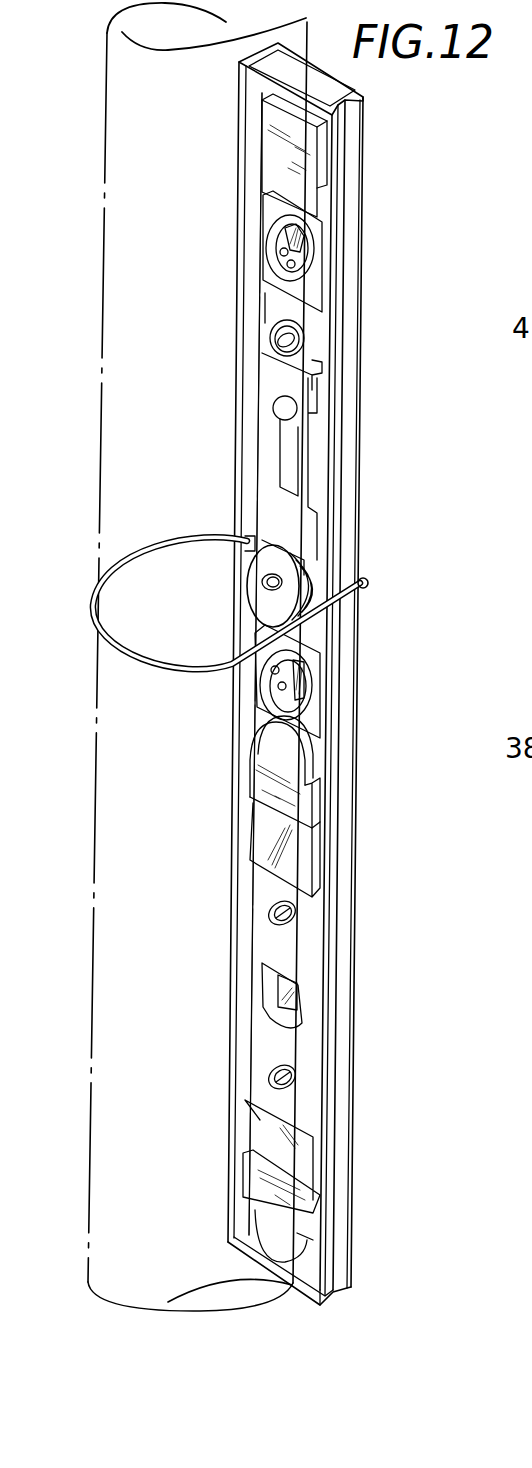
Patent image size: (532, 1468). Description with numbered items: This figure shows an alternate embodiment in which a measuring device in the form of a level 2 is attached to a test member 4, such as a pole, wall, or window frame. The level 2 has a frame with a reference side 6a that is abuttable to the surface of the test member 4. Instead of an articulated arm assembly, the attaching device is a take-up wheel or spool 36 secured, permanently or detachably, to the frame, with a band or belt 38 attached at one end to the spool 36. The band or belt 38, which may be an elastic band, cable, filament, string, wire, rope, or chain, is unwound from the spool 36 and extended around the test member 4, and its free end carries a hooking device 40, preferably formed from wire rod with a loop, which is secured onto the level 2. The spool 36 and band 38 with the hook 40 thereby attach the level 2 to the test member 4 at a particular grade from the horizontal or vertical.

The level 2 is at (331, 652).
The test member 4 is at (103, 360).
The reference side 6a is at (363, 220).
The spool 36 is at (291, 600).
The band 38 is at (180, 668).
The hooking device 40 is at (366, 588).